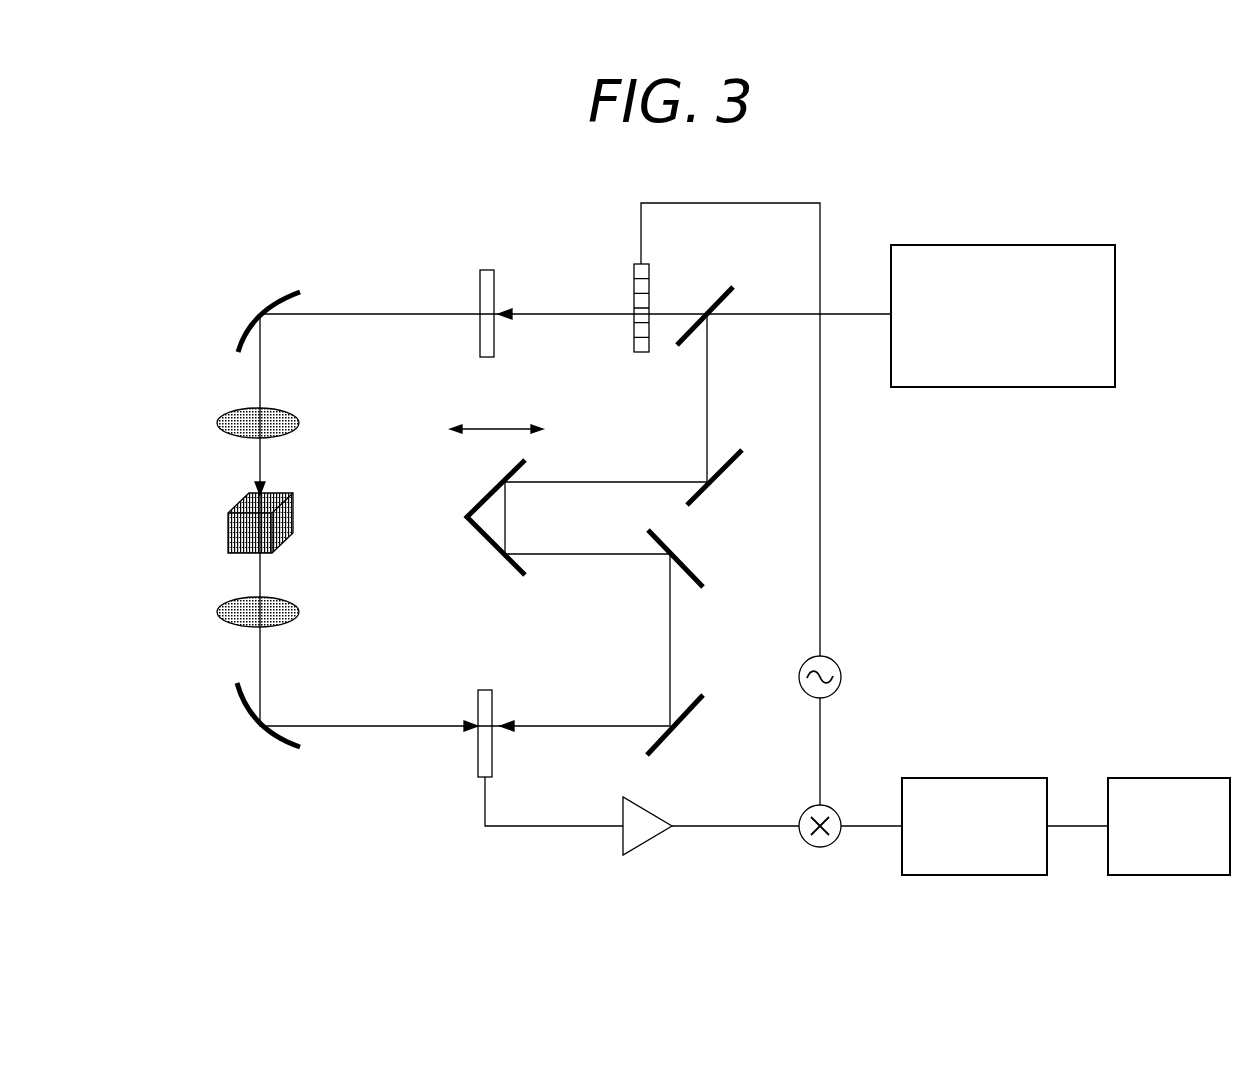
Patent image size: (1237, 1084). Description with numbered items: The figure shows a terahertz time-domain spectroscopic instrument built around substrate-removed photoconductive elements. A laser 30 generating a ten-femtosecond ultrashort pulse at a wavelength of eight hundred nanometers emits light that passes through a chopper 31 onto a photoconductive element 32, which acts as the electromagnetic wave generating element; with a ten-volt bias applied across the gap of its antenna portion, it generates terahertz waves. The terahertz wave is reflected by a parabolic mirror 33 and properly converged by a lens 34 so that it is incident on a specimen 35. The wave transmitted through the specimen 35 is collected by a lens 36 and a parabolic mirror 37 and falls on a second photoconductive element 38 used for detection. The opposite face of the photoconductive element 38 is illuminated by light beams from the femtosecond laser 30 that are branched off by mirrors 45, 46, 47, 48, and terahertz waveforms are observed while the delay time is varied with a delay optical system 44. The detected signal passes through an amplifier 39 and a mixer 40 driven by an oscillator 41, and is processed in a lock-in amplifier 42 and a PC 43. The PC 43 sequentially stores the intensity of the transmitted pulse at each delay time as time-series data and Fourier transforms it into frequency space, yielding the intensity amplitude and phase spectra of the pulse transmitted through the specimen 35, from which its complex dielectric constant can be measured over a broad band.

The laser 30 is at (1073, 245).
The chopper 31 is at (640, 305).
The photoconductive element 32 is at (487, 300).
The parabolic mirror 33 is at (258, 318).
The lens 34 is at (222, 418).
The specimen 35 is at (228, 530).
The lens 36 is at (220, 612).
The parabolic mirror 37 is at (262, 730).
The photoconductive element 38 is at (480, 765).
The amplifier 39 is at (645, 844).
The mixer 40 is at (821, 848).
The oscillator 41 is at (841, 683).
The lock-in amplifier 42 is at (1023, 877).
The PC 43 is at (1205, 877).
The delay optical system 44 is at (497, 551).
The mirror 45 is at (735, 297).
The mirror 46 is at (716, 486).
The mirror 47 is at (690, 556).
The mirror 48 is at (693, 715).